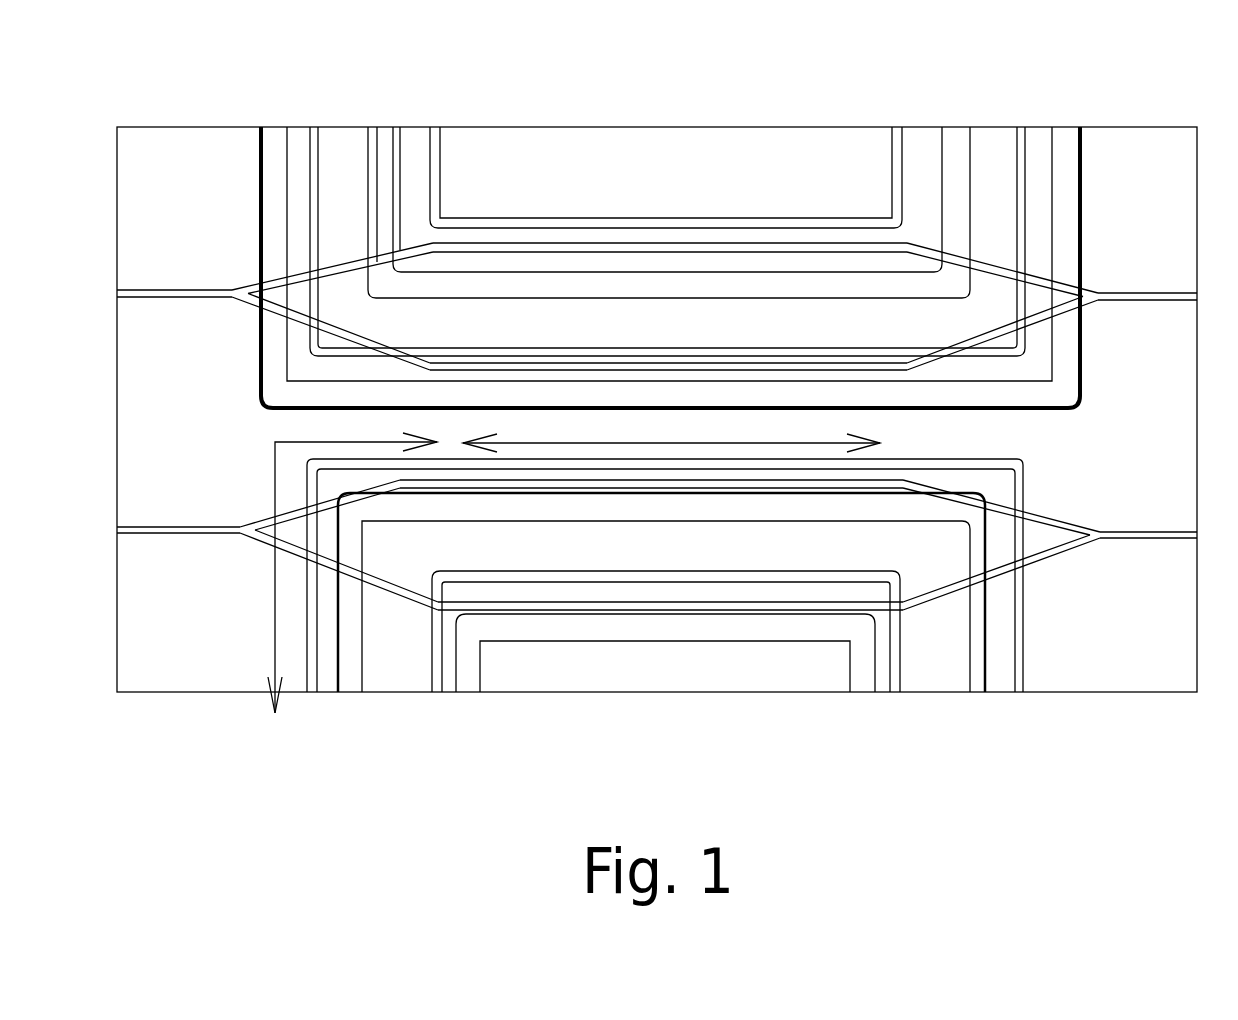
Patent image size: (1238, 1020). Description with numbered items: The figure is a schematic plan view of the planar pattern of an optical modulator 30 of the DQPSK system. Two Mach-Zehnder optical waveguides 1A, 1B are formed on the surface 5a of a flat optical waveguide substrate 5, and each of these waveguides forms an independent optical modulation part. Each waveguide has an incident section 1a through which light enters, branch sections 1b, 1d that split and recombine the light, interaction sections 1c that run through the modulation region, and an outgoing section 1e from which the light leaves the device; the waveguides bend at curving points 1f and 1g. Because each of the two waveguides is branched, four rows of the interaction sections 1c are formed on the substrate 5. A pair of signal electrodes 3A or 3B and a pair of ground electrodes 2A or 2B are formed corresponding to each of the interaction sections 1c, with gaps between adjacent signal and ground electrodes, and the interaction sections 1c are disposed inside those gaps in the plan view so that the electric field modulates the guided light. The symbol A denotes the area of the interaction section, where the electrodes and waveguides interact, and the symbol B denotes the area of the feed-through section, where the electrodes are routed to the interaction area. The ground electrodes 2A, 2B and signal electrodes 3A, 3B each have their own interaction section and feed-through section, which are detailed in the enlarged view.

The optical modulator 30 is at (1143, 129).
The Mach-Zehnder optical waveguide 1A is at (178, 278).
The Mach-Zehnder optical waveguide 1B is at (183, 523).
The incident section 1a is at (184, 302).
The branch section 1b is at (325, 346).
The interaction section 1c is at (718, 363).
The branch section 1d is at (997, 268).
The outgoing section 1e is at (1152, 293).
The curving point 1f is at (427, 607).
The curving point 1g is at (910, 610).
The ground electrode 2A is at (585, 633).
The ground electrode 2B is at (797, 527).
The signal electrode 3A is at (518, 577).
The signal electrode 3B is at (628, 463).
The optical waveguide substrate 5 is at (553, 141).
The surface 5a is at (625, 141).
The area of the interaction section A is at (745, 443).
The area of the feed-through section B is at (273, 577).